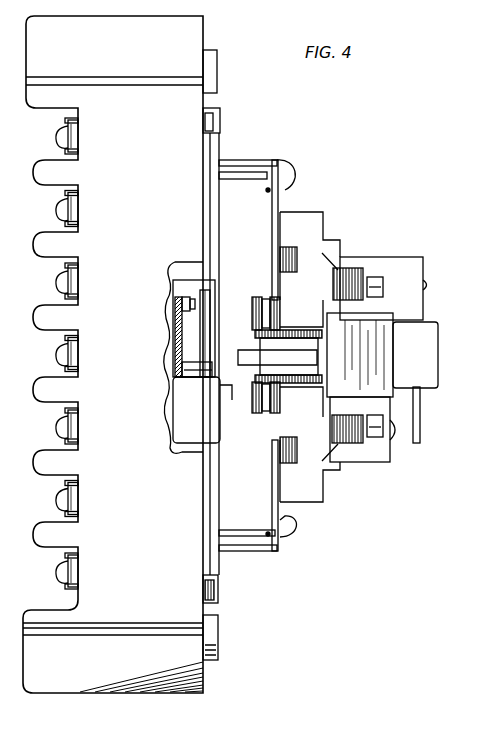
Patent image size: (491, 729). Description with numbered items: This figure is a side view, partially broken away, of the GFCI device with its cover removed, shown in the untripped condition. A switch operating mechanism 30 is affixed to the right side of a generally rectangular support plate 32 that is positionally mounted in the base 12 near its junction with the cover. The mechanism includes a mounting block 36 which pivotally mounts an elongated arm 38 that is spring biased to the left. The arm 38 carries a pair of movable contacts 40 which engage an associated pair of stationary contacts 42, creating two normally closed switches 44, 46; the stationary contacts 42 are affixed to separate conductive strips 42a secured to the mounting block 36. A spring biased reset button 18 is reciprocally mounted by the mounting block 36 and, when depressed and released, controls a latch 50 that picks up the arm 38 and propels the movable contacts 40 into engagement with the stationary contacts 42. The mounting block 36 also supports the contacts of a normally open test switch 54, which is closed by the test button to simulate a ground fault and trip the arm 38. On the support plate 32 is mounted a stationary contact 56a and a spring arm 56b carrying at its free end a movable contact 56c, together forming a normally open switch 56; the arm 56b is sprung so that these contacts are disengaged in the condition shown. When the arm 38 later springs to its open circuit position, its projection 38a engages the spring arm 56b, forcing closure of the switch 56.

The base 12 is at (143, 556).
The reset button 18 is at (390, 313).
The switch operating mechanism 30 is at (358, 462).
The support plate 32 is at (212, 560).
The mounting block 36 is at (328, 475).
The elongated arm 38 is at (227, 413).
The projection 38a is at (232, 403).
The movable contacts 40 is at (252, 396).
The stationary contacts 42 is at (281, 312).
The conductive strips 42a is at (290, 196).
The normally closed switch 44 is at (263, 294).
The normally closed switch 46 is at (263, 413).
The latch 50 is at (305, 360).
The test switch 54 is at (400, 437).
The switch 56 is at (192, 290).
The stationary contact 56a is at (184, 300).
The spring arm 56b is at (177, 374).
The movable contact 56c is at (177, 335).